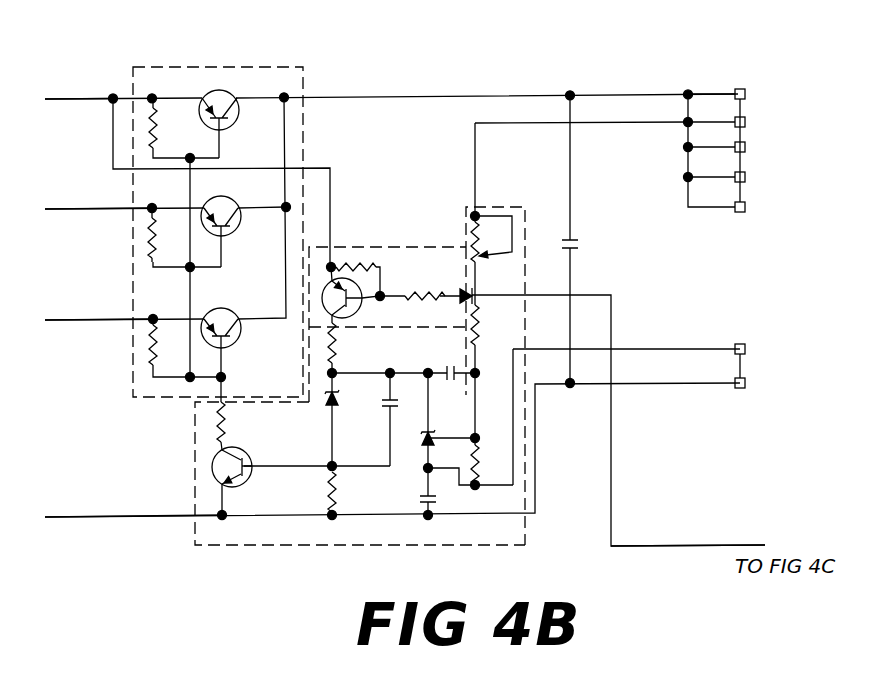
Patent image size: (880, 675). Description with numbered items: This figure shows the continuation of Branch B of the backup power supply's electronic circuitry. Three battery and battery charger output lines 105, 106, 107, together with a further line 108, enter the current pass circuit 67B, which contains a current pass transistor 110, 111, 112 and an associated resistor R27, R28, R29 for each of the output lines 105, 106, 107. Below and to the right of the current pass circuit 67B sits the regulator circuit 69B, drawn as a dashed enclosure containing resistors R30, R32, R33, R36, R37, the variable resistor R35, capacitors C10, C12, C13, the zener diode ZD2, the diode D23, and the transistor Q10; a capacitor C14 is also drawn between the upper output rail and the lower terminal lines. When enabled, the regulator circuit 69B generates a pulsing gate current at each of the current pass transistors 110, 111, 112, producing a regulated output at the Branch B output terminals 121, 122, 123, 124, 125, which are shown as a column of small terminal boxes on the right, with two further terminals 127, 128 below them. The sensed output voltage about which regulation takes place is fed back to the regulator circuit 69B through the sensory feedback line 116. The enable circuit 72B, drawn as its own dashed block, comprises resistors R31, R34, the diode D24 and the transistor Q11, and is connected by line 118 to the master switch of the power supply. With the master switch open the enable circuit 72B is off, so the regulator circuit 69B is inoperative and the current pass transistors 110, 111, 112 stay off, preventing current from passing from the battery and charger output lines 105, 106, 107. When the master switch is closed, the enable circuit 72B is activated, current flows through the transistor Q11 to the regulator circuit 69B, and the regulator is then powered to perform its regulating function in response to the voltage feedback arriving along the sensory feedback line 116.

The output line 105 is at (67, 94).
The output line 106 is at (67, 204).
The output line 107 is at (67, 315).
The input line 108 is at (67, 511).
The current pass circuit 67B is at (170, 58).
The enable circuit 72B is at (433, 238).
The regulator circuit 69B is at (351, 554).
The current pass transistor 110 is at (228, 91).
The current pass transistor 111 is at (222, 196).
The current pass transistor 112 is at (222, 308).
The resistor R27 is at (174, 124).
The resistor R28 is at (148, 259).
The resistor R29 is at (146, 372).
The resistor R30 is at (244, 413).
The transistor Q10 is at (247, 485).
The transistor Q11 is at (362, 313).
The resistor R31 is at (356, 258).
The resistor R32 is at (355, 343).
The resistor R33 is at (353, 492).
The resistor R34 is at (425, 286).
The diode D24 is at (462, 299).
The zener diode ZD2 is at (351, 413).
The capacitor C10 is at (406, 415).
The capacitor C12 is at (455, 387).
The diode D23 is at (449, 450).
The capacitor C13 is at (448, 503).
The variable resistor R35 is at (477, 265).
The resistor R36 is at (478, 318).
The resistor R37 is at (480, 485).
The capacitor C14 is at (588, 254).
The sensory feedback line 116 is at (600, 128).
The line 118 is at (740, 544).
The output terminal 121 is at (761, 96).
The output terminal 122 is at (761, 124).
The output terminal 123 is at (761, 149).
The output terminal 124 is at (761, 179).
The output terminal 125 is at (761, 209).
The output terminal 127 is at (762, 351).
The output terminal 128 is at (762, 384).